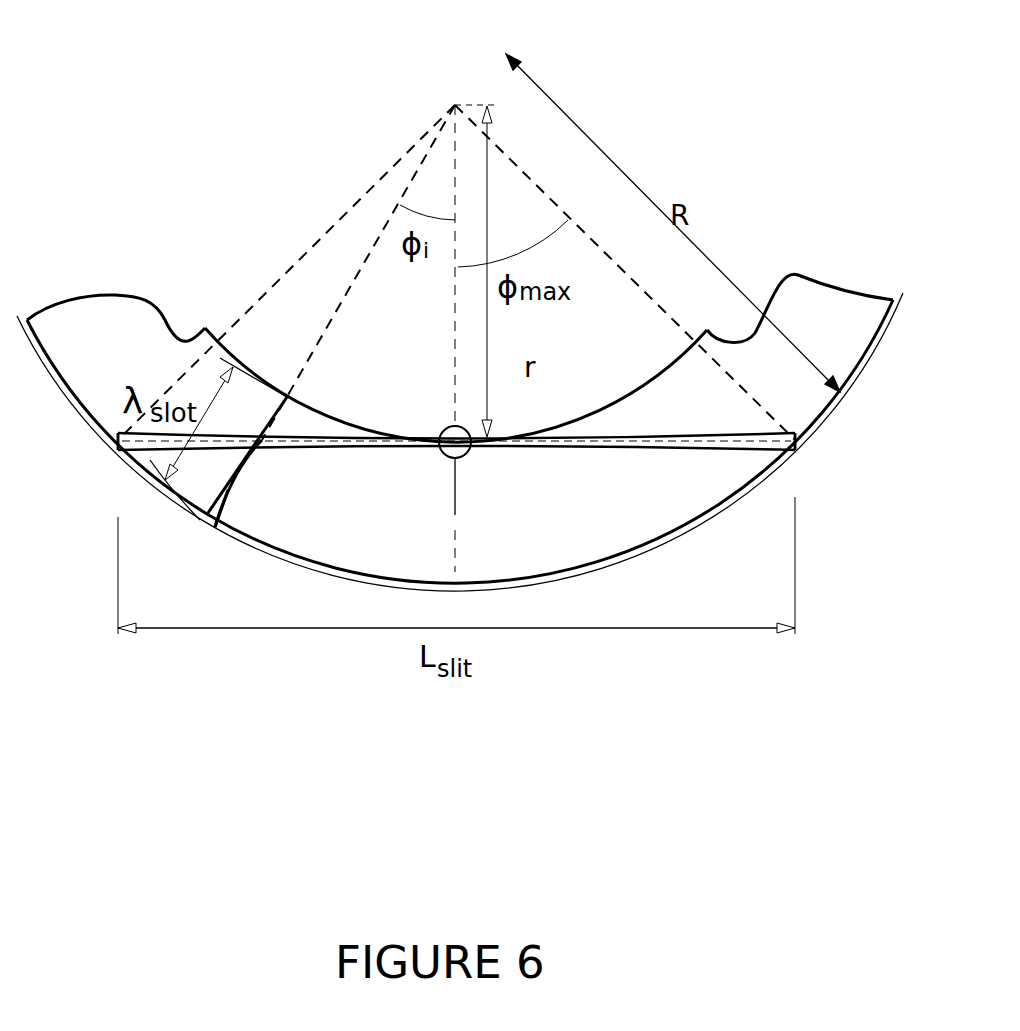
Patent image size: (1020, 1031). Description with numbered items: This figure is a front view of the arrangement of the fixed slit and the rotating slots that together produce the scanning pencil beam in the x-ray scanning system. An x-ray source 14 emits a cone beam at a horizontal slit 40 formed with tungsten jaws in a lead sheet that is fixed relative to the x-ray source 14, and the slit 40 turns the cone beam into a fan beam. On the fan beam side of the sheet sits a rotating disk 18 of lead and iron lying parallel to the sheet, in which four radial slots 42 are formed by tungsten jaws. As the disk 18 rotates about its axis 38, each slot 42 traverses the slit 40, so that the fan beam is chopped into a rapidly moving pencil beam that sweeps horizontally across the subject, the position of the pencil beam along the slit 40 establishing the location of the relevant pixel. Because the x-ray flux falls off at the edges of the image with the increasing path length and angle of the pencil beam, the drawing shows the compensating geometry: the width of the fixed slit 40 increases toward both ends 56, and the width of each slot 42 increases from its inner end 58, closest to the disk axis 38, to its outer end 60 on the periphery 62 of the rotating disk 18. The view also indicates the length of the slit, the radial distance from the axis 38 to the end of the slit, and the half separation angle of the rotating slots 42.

The x-ray source 14 is at (462, 447).
The rotating disk 18 is at (865, 370).
The disk axis 38 is at (455, 105).
The horizontal slit 40 is at (757, 440).
The radial slot 42 is at (228, 505).
The slit end 56 is at (120, 438).
The inner end of slot 58 is at (287, 397).
The outer end of slot 60 is at (220, 527).
The periphery of rotating disk 62 is at (168, 498).